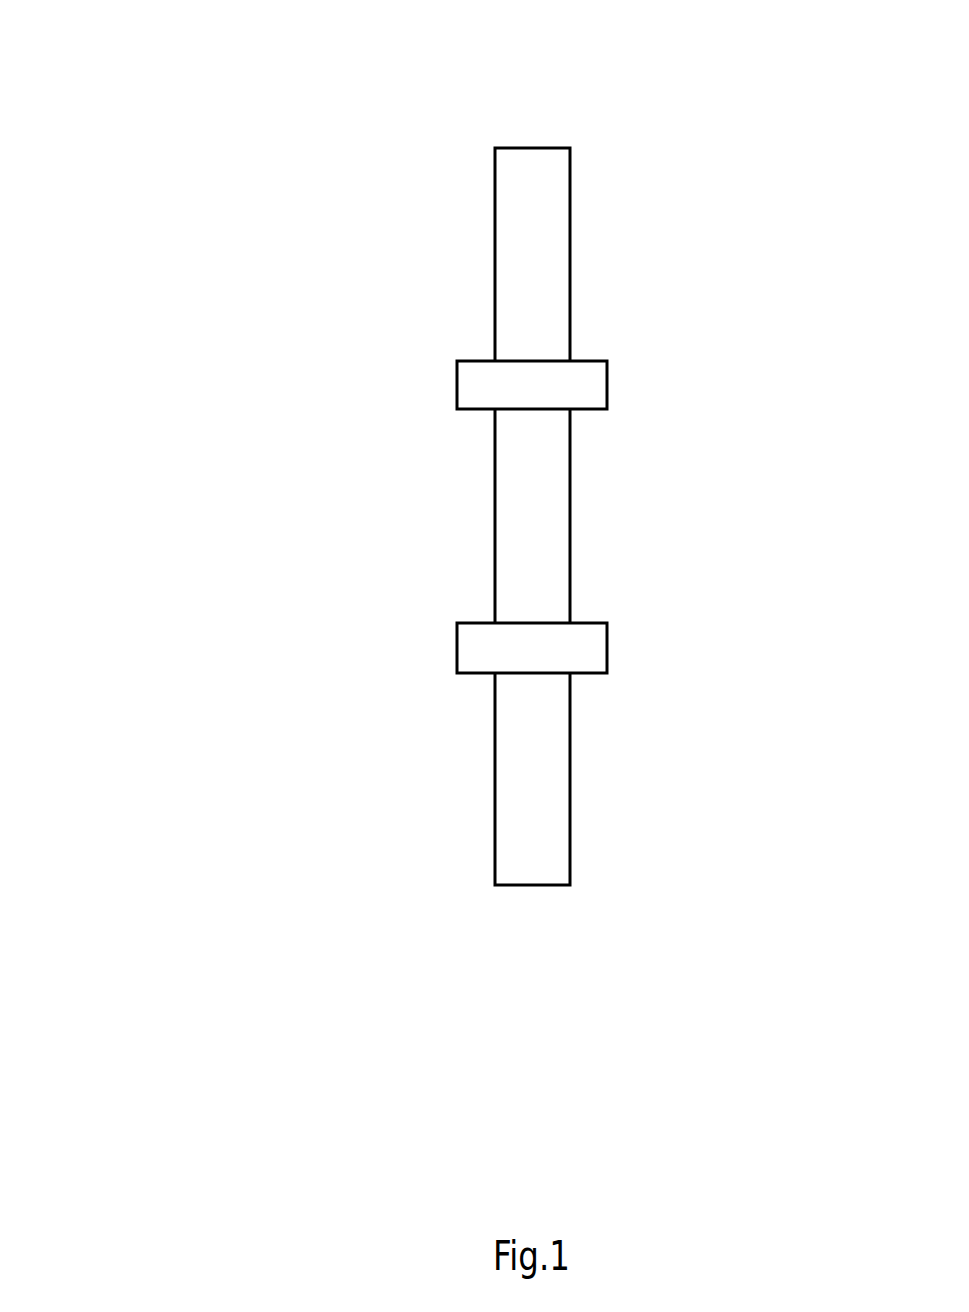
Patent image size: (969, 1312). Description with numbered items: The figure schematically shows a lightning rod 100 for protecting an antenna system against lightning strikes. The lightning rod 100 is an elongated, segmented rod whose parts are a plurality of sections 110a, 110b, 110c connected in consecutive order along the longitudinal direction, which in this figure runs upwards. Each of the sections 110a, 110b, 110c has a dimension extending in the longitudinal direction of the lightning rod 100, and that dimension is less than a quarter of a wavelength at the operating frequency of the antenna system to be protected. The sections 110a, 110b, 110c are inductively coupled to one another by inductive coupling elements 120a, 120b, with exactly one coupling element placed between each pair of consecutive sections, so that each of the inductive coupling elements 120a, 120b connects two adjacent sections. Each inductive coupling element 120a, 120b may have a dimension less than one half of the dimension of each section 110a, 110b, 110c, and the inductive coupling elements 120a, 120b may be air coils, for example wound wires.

The lightning rod 100 is at (318, 146).
The section 110a is at (570, 253).
The section 110b is at (570, 515).
The section 110c is at (570, 778).
The inductive coupling element 120a is at (493, 385).
The inductive coupling element 120b is at (457, 647).